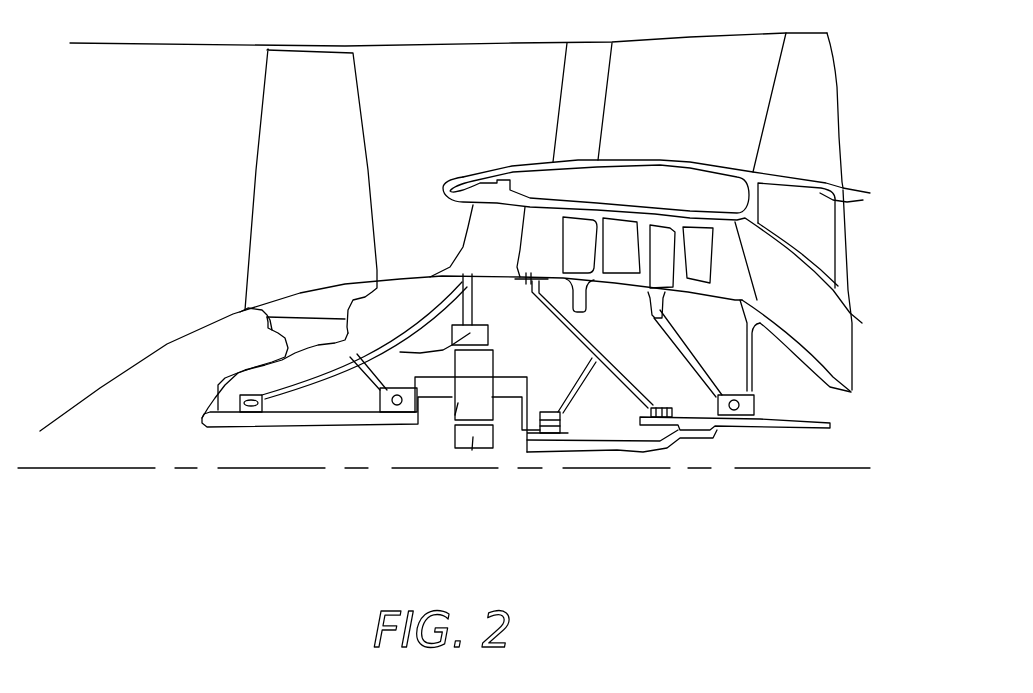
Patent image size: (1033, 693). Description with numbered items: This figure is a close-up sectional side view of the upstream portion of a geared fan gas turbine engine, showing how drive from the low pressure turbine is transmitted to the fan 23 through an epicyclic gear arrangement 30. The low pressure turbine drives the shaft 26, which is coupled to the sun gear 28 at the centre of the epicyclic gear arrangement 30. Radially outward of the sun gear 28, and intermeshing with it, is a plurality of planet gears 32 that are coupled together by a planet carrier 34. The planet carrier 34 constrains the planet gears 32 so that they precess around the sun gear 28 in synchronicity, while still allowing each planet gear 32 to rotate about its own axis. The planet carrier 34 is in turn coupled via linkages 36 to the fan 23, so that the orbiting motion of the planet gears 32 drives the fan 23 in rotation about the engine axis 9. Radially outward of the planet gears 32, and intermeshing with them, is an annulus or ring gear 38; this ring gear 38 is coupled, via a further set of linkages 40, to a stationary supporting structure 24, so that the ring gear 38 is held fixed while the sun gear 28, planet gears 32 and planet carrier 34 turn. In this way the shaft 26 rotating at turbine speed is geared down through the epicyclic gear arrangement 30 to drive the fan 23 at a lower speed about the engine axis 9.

The engine axis 9 is at (135, 470).
The fan 23 is at (268, 160).
The stationary supporting structure 24 is at (473, 240).
The shaft 26 is at (727, 426).
The sun gear 28 is at (493, 435).
The epicyclic gear arrangement 30 is at (437, 417).
The planet gears 32 is at (472, 450).
The planet carrier 34 is at (527, 415).
The linkages 36 is at (422, 412).
The ring gear 38 is at (240, 312).
The linkages 40 is at (415, 320).